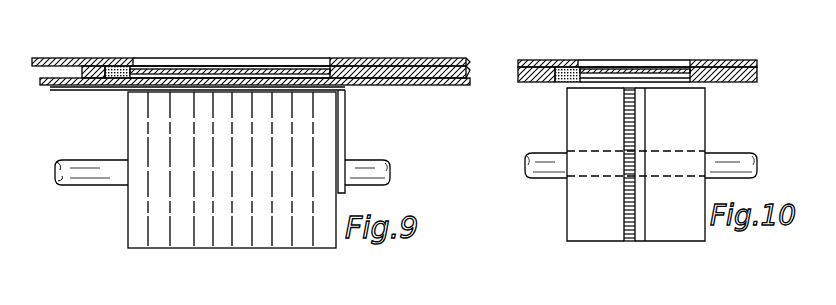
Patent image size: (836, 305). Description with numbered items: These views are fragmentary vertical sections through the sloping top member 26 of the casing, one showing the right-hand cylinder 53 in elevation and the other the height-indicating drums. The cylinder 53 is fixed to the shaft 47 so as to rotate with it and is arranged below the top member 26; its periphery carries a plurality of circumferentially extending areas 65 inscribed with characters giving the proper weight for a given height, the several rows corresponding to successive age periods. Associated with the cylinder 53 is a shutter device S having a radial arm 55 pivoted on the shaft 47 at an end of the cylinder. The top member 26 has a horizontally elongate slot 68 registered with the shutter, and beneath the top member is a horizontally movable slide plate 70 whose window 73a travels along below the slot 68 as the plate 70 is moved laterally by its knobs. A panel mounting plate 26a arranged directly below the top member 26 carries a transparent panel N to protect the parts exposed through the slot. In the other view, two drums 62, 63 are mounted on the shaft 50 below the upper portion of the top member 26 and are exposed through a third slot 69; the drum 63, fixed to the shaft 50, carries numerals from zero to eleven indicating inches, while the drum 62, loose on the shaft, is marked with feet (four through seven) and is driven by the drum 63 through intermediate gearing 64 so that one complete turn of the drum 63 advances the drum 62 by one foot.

In FIG. 9, the top member 26 is at (410, 48).
In FIG. 10, the top member 26 is at (731, 65).
In FIG. 9, the panel mounting plate 26a is at (492, 45).
In FIG. 10, the panel mounting plate 26a is at (735, 78).
In FIG. 9, the slot 68 is at (182, 47).
In FIG. 9, the window 73a is at (238, 93).
In FIG. 9, the transparent panel N is at (293, 70).
In FIG. 9, the slide plate 70 is at (400, 88).
In FIG. 9, the shutter device S is at (92, 88).
In FIG. 9, the radial arm 55 is at (347, 135).
In FIG. 9, the shaft 47 is at (73, 178).
In FIG. 9, the cylinder 53 is at (218, 188).
In FIG. 9, the circumferentially extending areas 65 is at (315, 249).
In FIG. 10, the slot 69 is at (682, 48).
In FIG. 10, the shaft 50 is at (540, 155).
In FIG. 10, the drum 62 is at (605, 235).
In FIG. 10, the intermediate gearing 64 is at (632, 248).
In FIG. 10, the drum 63 is at (695, 235).